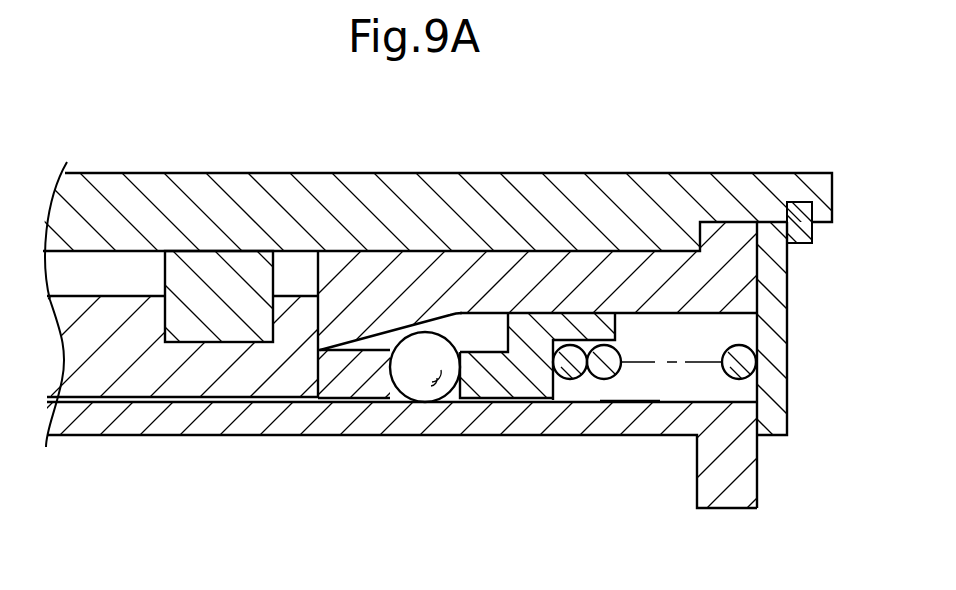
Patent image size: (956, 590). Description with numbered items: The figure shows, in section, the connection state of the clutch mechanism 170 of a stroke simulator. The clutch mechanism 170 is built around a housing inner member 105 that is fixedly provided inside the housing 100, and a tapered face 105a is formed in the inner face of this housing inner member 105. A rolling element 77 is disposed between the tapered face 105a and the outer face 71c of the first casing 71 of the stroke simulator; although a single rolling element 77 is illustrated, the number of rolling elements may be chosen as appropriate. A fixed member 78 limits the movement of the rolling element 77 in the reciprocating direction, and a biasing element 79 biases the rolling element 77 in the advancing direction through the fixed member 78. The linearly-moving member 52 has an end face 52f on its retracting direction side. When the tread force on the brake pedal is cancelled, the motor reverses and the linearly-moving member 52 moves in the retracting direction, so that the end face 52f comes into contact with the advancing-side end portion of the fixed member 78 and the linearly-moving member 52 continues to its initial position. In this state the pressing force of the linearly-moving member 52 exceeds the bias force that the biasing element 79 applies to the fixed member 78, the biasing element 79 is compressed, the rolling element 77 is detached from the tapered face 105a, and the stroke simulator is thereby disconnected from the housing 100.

The housing 100 is at (155, 173).
The linearly-moving member 52 is at (150, 382).
The end face of the linearly-moving member 52f is at (320, 315).
The clutch mechanism 170 is at (392, 314).
The housing inner member 105 is at (533, 275).
The tapered face 105a is at (473, 357).
The fixed member 78 is at (362, 397).
The rolling element 77 is at (430, 387).
The biasing element 79 is at (570, 380).
The first casing 71 is at (273, 423).
The outer face of the first casing 71c is at (605, 400).